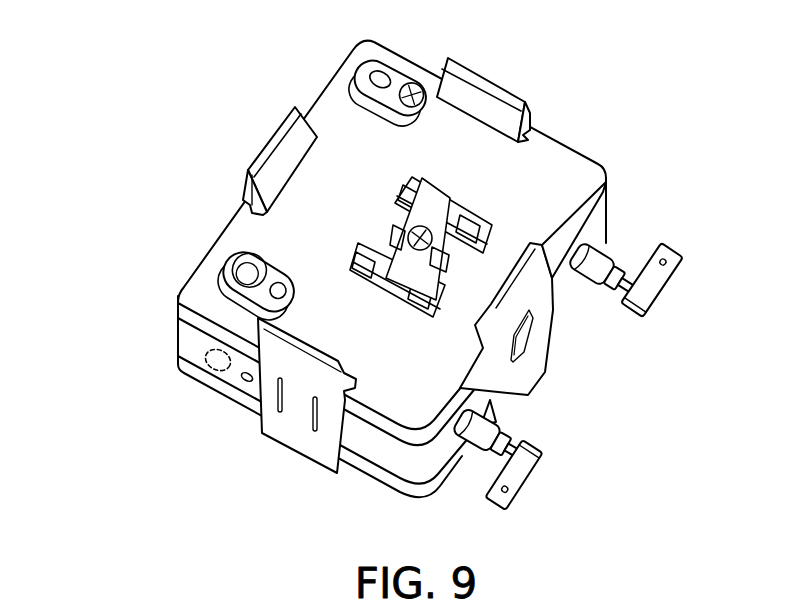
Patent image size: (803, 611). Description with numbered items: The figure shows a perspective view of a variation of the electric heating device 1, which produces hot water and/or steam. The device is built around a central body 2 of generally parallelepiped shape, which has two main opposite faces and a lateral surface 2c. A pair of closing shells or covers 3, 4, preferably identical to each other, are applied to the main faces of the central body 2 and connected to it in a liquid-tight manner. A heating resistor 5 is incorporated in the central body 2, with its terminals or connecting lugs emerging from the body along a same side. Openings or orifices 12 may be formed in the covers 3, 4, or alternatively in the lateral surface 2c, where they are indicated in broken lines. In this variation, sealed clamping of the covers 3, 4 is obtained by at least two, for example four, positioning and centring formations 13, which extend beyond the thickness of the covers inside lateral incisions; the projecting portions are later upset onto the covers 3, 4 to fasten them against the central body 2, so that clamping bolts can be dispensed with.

The electric heating device 1 is at (371, 266).
The central body 2 is at (170, 328).
The lateral surface 2c is at (300, 415).
The closing shell or cover 3 is at (335, 115).
The closing shell or cover 4 is at (563, 305).
The heating resistor 5 is at (600, 250).
The openings or orifices 12 is at (405, 62).
The positioning and centring formations 13 is at (497, 76).